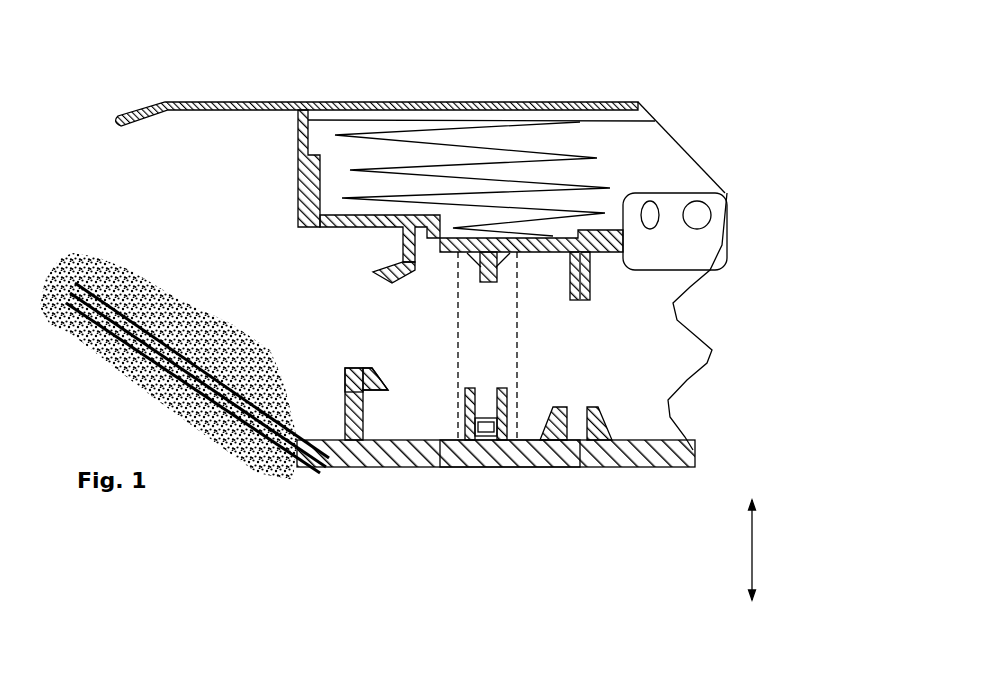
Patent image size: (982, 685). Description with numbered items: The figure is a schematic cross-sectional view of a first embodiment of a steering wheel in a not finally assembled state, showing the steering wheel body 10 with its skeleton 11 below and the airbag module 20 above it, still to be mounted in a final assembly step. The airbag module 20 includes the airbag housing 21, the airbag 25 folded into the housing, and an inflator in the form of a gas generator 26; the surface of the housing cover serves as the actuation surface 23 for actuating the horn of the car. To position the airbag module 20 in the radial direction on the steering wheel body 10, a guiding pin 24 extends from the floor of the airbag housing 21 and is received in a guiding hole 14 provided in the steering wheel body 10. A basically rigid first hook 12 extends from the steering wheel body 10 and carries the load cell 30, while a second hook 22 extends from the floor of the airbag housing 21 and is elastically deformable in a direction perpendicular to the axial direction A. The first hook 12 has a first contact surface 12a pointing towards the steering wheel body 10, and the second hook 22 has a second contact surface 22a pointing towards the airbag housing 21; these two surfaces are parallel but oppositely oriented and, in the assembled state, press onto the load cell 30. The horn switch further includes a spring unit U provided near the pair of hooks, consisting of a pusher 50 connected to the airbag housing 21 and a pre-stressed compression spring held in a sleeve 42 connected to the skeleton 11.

The steering wheel body 10 is at (399, 374).
The skeleton 11 is at (325, 465).
The first hook 12 is at (343, 408).
The first contact surface 12a is at (367, 387).
The guiding hole 14 is at (575, 432).
The airbag module 20 is at (700, 122).
The airbag housing 21 is at (307, 220).
The second hook 22 is at (423, 215).
The second contact surface 22a is at (390, 267).
The actuation surface 23 is at (375, 100).
The guiding pin 24 is at (590, 262).
The airbag 25 is at (592, 122).
The gas generator 26 is at (712, 202).
The load cell 30 is at (368, 394).
The sleeve 42 is at (512, 440).
The pusher 50 is at (492, 262).
The spring unit U is at (517, 337).
The axial direction A is at (767, 550).